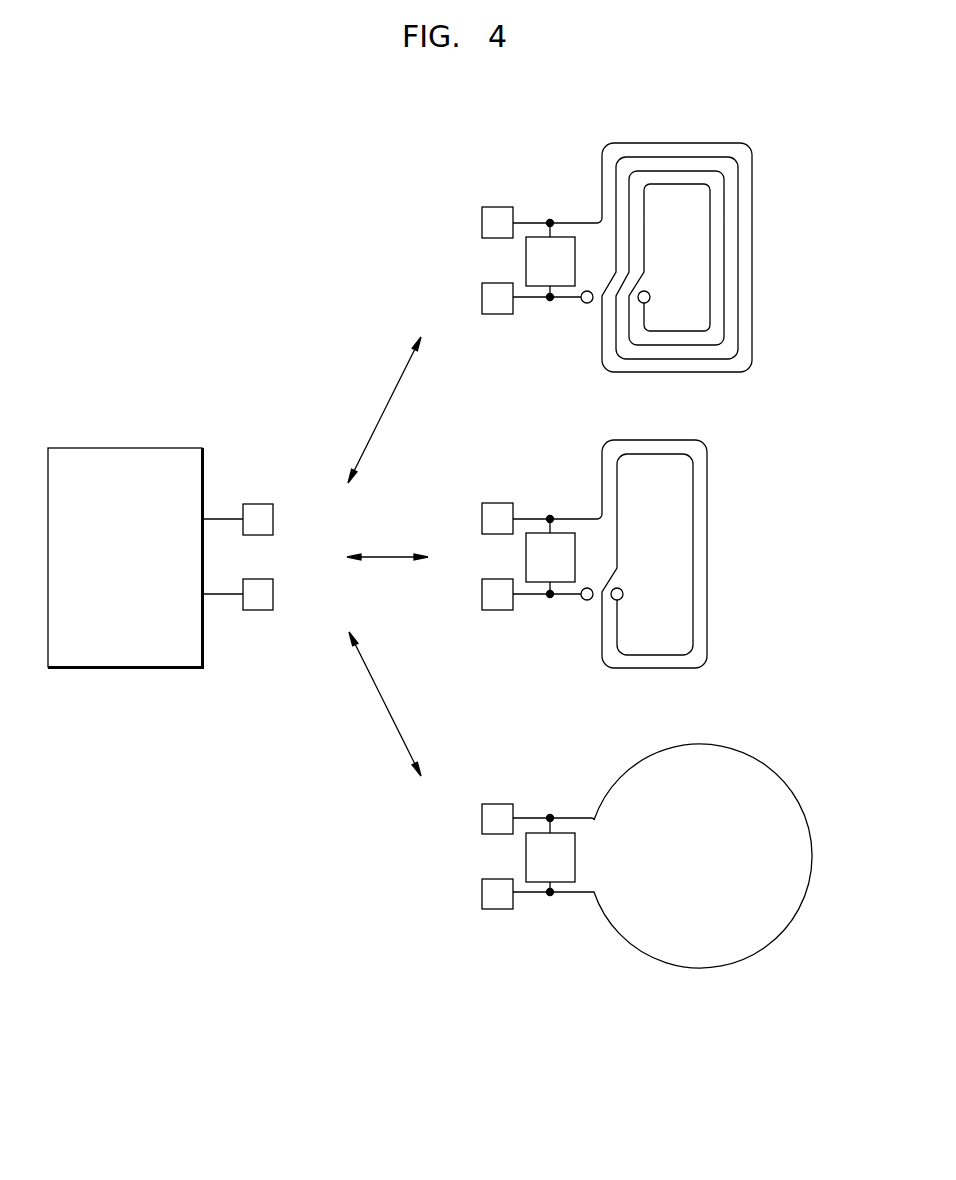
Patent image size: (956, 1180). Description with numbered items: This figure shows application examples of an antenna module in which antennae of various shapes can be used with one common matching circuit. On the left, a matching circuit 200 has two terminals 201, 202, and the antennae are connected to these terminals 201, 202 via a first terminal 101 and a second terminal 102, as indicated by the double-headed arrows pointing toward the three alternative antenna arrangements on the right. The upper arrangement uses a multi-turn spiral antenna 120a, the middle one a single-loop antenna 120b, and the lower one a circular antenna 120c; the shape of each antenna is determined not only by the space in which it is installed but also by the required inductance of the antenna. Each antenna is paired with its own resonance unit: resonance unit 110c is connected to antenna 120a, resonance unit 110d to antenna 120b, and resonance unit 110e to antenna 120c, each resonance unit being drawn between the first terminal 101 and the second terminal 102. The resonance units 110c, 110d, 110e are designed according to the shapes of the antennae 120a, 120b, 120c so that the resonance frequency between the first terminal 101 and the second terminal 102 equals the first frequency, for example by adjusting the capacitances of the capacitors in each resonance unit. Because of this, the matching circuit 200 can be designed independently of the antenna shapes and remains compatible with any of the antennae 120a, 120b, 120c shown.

The first terminal 101 is at (497, 207).
The second terminal 102 is at (497, 314).
The resonance unit 110c is at (529, 270).
The resonance unit 110d is at (529, 566).
The resonance unit 110e is at (529, 866).
The antenna 120a is at (752, 257).
The antenna 120b is at (707, 554).
The antenna 120c is at (786, 784).
The matching circuit 200 is at (145, 448).
The terminal 201 is at (258, 504).
The terminal 202 is at (258, 610).